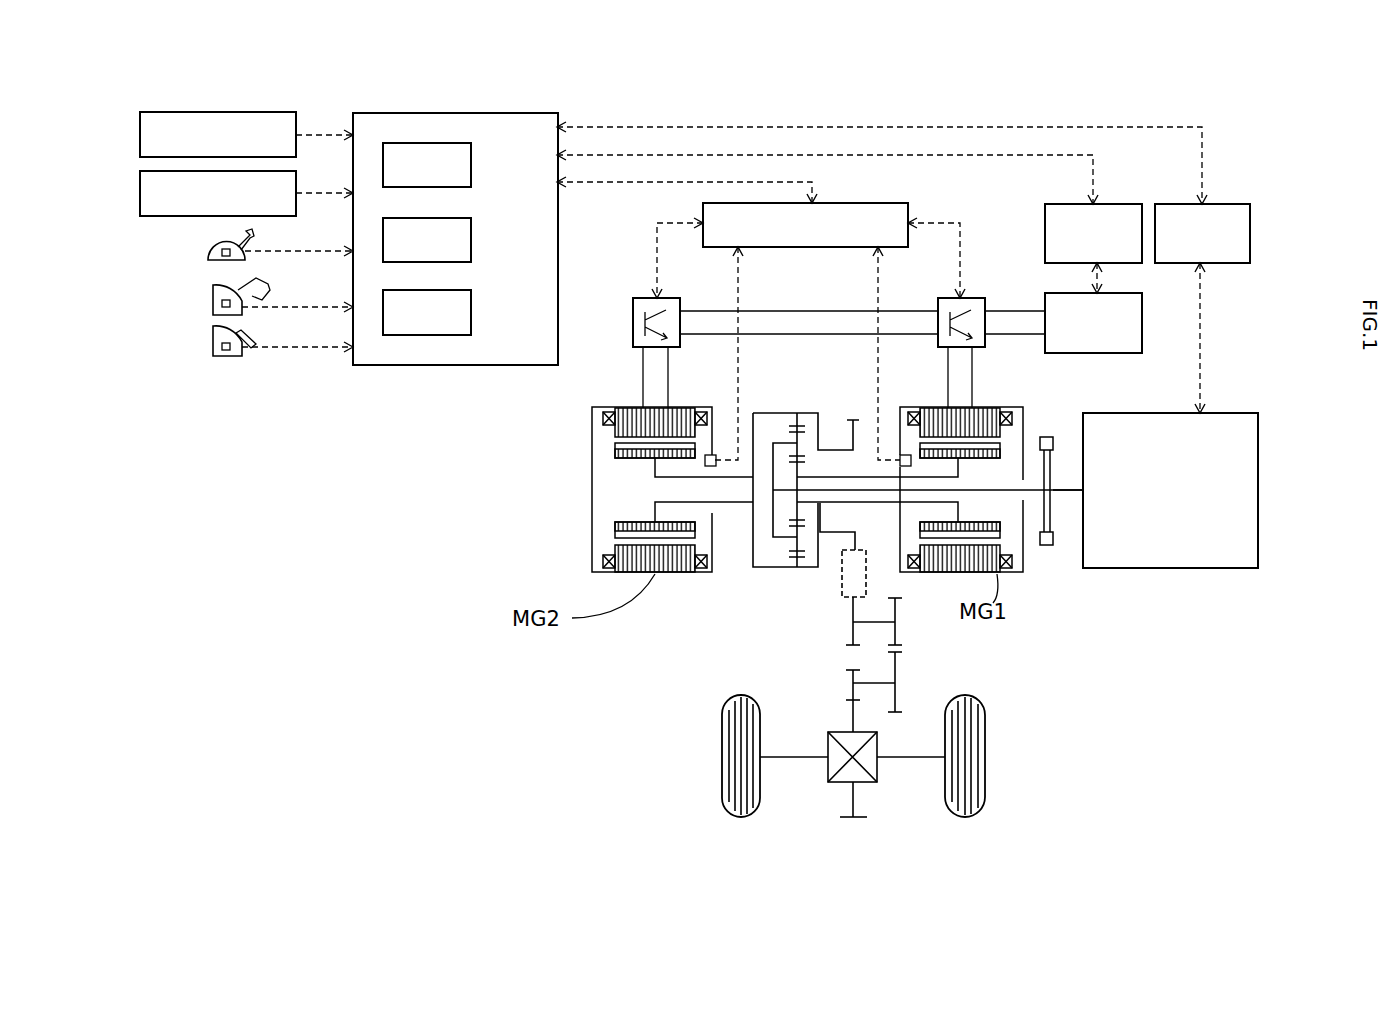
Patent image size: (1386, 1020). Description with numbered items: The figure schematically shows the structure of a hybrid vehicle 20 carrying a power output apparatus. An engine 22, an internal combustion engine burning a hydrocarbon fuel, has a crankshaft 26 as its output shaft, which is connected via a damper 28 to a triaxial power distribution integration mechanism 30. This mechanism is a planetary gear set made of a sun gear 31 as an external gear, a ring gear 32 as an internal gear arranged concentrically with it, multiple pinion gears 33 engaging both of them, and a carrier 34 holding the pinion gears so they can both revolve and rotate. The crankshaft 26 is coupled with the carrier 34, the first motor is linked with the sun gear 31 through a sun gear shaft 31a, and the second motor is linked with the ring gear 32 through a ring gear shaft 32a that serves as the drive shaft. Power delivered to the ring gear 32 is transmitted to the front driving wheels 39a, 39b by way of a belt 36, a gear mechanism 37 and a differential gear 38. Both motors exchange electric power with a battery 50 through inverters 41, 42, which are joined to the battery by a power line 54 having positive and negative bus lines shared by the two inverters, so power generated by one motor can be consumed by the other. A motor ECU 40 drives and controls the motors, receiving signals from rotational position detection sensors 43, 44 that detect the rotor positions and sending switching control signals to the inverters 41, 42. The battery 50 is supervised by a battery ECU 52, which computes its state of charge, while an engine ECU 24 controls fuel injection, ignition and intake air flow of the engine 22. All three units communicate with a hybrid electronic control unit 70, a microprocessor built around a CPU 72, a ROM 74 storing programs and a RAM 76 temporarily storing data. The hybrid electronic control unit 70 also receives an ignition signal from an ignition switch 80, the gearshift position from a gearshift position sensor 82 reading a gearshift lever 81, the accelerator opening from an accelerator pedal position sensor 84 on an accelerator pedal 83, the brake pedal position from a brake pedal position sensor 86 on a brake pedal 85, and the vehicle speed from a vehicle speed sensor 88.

The hybrid vehicle 20 is at (1137, 107).
The engine 22 is at (1258, 452).
The engine electronic control unit 24 is at (1205, 202).
The crankshaft 26 is at (1065, 494).
The damper 28 is at (1050, 548).
The power distribution integration mechanism 30 is at (838, 528).
The sun gear 31 is at (822, 504).
The sun gear shaft 31a is at (828, 537).
The ring gear 32 is at (803, 412).
The ring gear shaft 32a is at (723, 505).
The pinion gears 33 is at (800, 447).
The carrier 34 is at (772, 465).
The belt 36 is at (867, 573).
The gear mechanism 37 is at (982, 678).
The differential gear 38 is at (877, 771).
The front driving wheel 39a is at (722, 790).
The front driving wheel 39b is at (985, 790).
The motor electronic control unit 40 is at (840, 203).
The inverter 41 is at (633, 298).
The inverter 42 is at (985, 298).
The rotational position detection sensor 43 is at (903, 455).
The rotational position detection sensor 44 is at (711, 455).
The battery 50 is at (1095, 353).
The battery electronic control unit 52 is at (1070, 204).
The power line 54 is at (786, 333).
The hybrid electronic control unit 70 is at (458, 113).
The CPU 72 is at (471, 165).
The ROM 74 is at (471, 243).
The RAM 76 is at (471, 316).
The ignition switch 80 is at (140, 131).
The gearshift lever 81 is at (245, 236).
The gearshift position sensor 82 is at (222, 252).
The accelerator pedal 83 is at (255, 281).
The accelerator pedal position sensor 84 is at (222, 304).
The brake pedal 85 is at (244, 337).
The brake pedal position sensor 86 is at (222, 347).
The vehicle speed sensor 88 is at (140, 189).